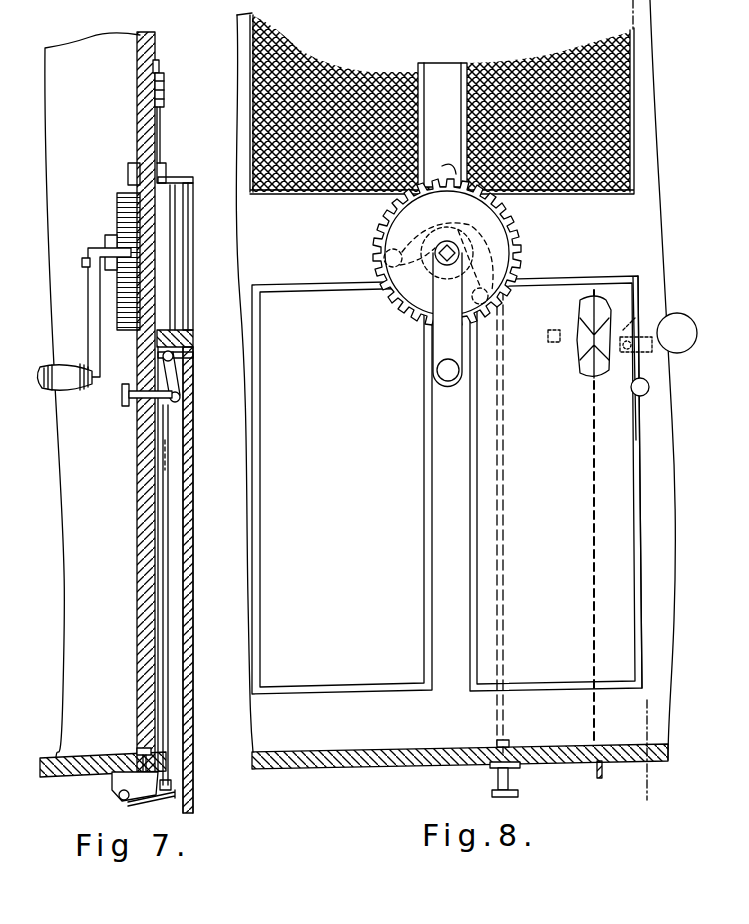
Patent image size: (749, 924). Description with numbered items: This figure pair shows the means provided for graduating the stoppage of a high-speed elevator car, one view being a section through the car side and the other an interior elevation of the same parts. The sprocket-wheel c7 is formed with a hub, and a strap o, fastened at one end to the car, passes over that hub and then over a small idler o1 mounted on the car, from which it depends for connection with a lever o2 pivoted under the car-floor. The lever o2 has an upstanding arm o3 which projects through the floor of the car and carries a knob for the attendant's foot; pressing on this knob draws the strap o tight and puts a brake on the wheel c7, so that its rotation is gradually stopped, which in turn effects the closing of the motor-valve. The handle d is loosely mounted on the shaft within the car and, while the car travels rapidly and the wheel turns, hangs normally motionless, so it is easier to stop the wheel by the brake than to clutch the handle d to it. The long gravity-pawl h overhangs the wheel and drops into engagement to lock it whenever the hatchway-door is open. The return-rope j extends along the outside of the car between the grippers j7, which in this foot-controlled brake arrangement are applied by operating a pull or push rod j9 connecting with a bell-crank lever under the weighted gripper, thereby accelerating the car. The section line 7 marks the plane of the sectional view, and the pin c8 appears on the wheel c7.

In FIG. 7, the sprocket-wheel c7 is at (128, 188).
In FIG. 8, the sprocket-wheel c7 is at (509, 234).
In FIG. 7, the cam / pin on gear c8 is at (165, 250).
In FIG. 8, the cam / pin on gear c8 is at (430, 262).
In FIG. 7, the handle d is at (92, 310).
In FIG. 7, the strap o is at (165, 305).
In FIG. 8, the strap o is at (498, 475).
In FIG. 8, the idler o1 is at (487, 297).
In FIG. 7, the lever o2 is at (158, 792).
In FIG. 8, the lever o2 is at (508, 787).
In FIG. 7, the upstanding arm o3 is at (143, 747).
In FIG. 8, the upstanding arm o3 is at (512, 743).
In FIG. 8, the gravity-pawl h is at (442, 125).
In FIG. 8, the return-rope j is at (585, 310).
In FIG. 8, the grippers j7 is at (618, 384).
In FIG. 7, the pull or push rod j9 is at (140, 403).
In FIG. 8, the pull or push rod j9 is at (650, 385).
In FIG. 8, the section line 7 is at (645, 412).